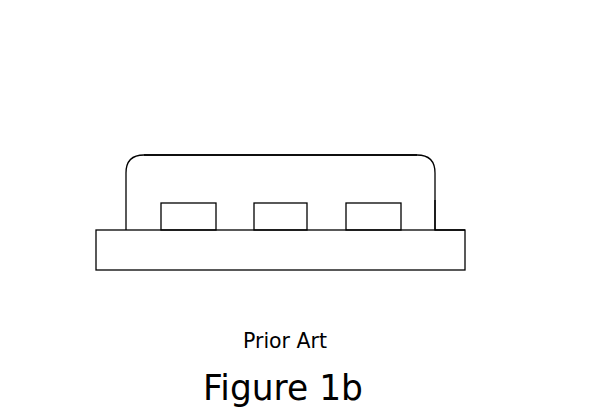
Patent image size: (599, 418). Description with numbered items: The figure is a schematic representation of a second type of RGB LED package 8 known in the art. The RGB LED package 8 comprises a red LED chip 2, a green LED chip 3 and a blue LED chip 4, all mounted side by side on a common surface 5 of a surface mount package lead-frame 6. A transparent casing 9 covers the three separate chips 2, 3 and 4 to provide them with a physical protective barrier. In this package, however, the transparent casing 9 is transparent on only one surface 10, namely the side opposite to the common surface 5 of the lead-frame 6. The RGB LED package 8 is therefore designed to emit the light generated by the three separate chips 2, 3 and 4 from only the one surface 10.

The red LED chip 2 is at (186, 218).
The green LED chip 3 is at (275, 218).
The blue LED chip 4 is at (373, 218).
The common surface 5 is at (454, 230).
The surface mount package lead-frame 6 is at (455, 253).
The RGB LED package 8 is at (507, 92).
The transparent casing 9 is at (125, 205).
The surface 10 is at (353, 155).